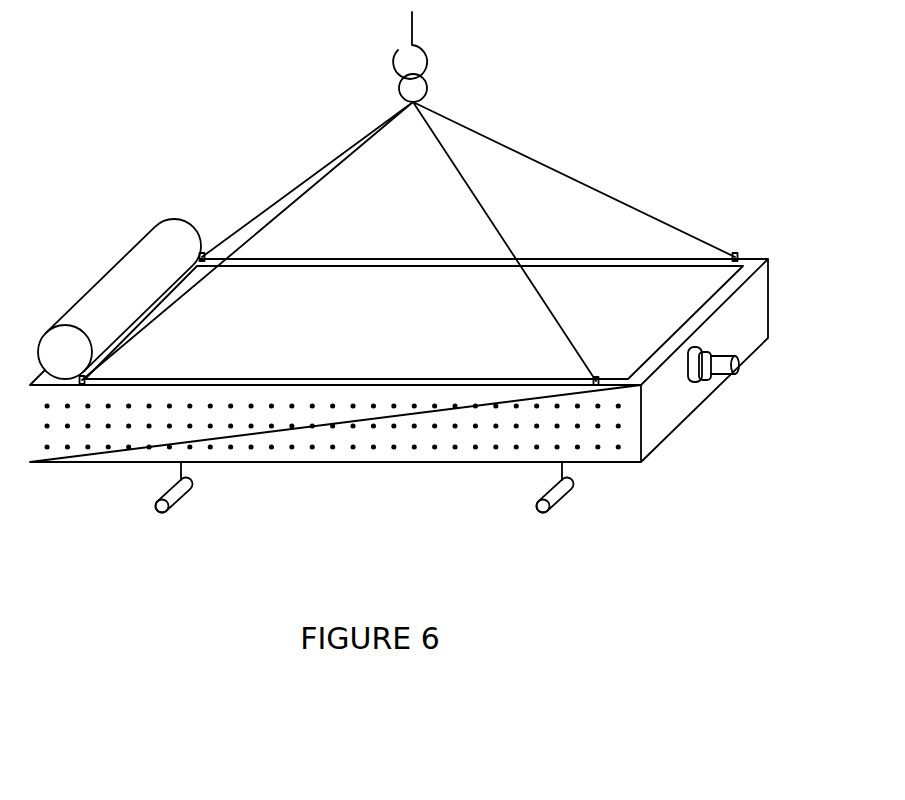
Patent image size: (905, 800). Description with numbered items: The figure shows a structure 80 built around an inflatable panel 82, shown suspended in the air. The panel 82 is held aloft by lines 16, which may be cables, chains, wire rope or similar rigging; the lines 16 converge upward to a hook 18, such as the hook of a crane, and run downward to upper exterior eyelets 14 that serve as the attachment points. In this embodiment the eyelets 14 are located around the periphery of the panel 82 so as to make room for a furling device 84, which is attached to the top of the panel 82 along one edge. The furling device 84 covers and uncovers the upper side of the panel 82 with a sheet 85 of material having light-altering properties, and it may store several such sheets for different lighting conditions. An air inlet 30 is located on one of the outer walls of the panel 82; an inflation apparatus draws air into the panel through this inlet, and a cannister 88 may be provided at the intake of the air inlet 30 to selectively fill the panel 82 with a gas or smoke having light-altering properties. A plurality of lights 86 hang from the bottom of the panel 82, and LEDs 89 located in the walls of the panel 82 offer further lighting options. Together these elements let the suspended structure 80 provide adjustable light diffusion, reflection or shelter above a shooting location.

The structure 80 is at (678, 122).
The hook 18 is at (428, 65).
The lines 16 is at (348, 149).
The upper exterior eyelets 14 is at (202, 253).
The furling device 84 is at (133, 258).
The inflatable panel 82 is at (742, 313).
The sheet 85 is at (390, 263).
The LEDs 89 is at (618, 447).
The air inlet 30 is at (700, 383).
The cannister 88 is at (734, 370).
The lights 86 is at (192, 491).